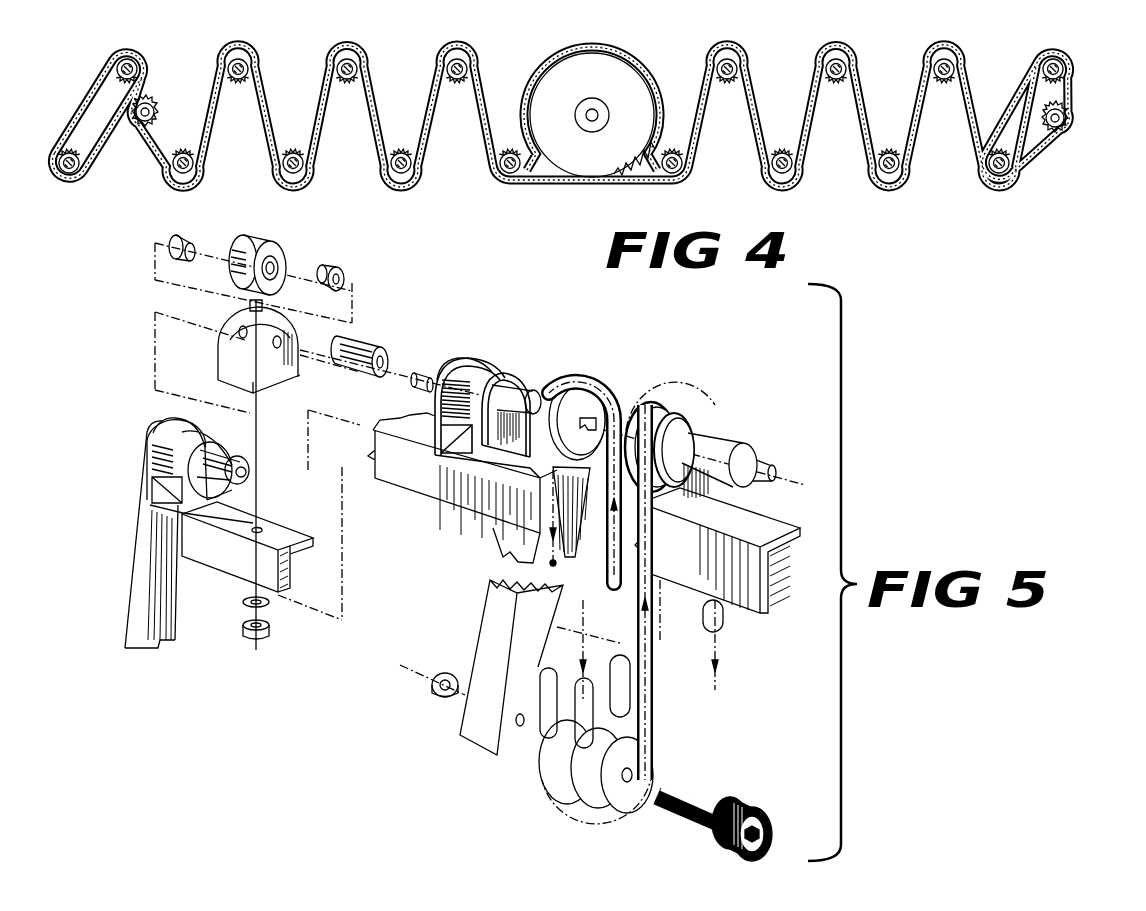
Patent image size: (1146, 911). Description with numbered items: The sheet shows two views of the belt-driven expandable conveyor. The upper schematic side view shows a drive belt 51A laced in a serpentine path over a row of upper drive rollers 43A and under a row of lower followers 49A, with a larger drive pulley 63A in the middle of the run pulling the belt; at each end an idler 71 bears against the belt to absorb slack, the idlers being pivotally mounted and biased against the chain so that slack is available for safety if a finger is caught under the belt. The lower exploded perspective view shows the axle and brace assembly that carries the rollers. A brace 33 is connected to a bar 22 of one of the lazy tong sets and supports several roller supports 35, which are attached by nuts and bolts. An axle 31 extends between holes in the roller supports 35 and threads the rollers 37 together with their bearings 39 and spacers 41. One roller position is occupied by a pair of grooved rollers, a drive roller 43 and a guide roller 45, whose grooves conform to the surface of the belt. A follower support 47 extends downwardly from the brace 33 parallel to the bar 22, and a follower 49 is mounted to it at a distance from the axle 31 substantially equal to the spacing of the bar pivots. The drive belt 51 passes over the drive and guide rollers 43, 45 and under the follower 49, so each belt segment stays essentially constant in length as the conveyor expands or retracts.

In FIG. 5, the bar 22 is at (130, 585).
In FIG. 5, the axle 31 is at (246, 474).
In FIG. 5, the brace 33 is at (248, 570).
In FIG. 5, the roller support 35 is at (532, 356).
In FIG. 5, the roller 37 is at (256, 238).
In FIG. 5, the bearing 39 is at (176, 234).
In FIG. 5, the spacer 41 is at (350, 348).
In FIG. 5, the drive roller 43 is at (690, 410).
In FIG. 5, the guide roller 45 is at (598, 398).
In FIG. 5, the follower support 47 is at (488, 628).
In FIG. 5, the follower 49 is at (560, 770).
In FIG. 5, the drive belt 51 is at (655, 640).
In FIG. 4, the upper pulley 43A is at (468, 70).
In FIG. 4, the lower pulley 49A is at (308, 150).
In FIG. 4, the serpentine belt 51A is at (330, 70).
In FIG. 4, the drive pulley 63A is at (620, 85).
In FIG. 4, the idler 71 is at (152, 104).